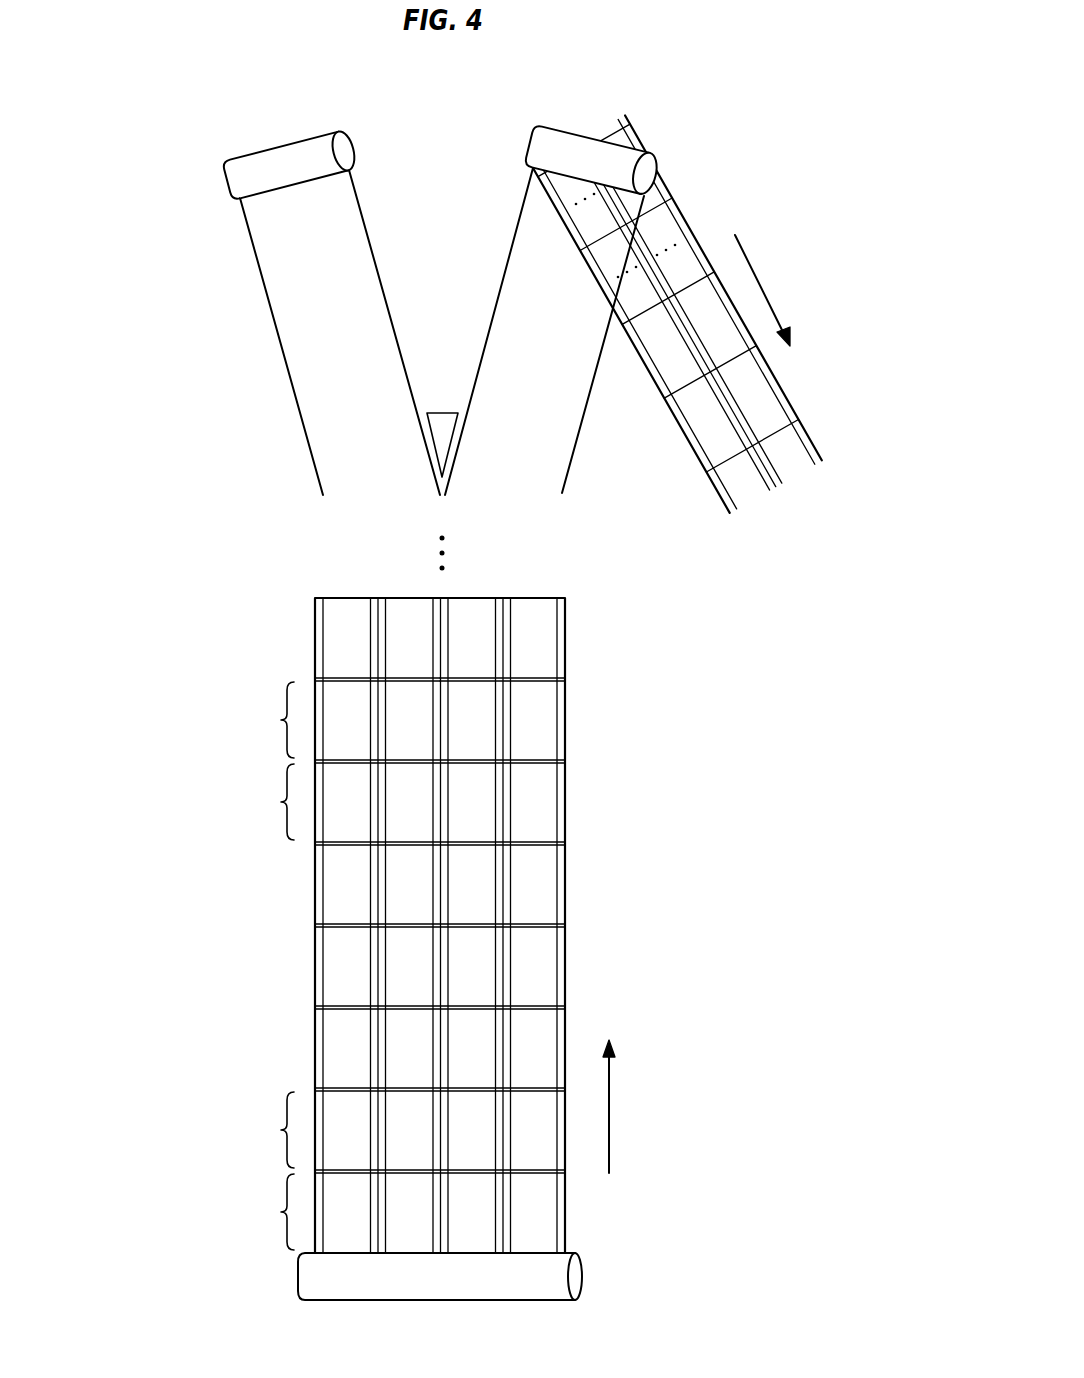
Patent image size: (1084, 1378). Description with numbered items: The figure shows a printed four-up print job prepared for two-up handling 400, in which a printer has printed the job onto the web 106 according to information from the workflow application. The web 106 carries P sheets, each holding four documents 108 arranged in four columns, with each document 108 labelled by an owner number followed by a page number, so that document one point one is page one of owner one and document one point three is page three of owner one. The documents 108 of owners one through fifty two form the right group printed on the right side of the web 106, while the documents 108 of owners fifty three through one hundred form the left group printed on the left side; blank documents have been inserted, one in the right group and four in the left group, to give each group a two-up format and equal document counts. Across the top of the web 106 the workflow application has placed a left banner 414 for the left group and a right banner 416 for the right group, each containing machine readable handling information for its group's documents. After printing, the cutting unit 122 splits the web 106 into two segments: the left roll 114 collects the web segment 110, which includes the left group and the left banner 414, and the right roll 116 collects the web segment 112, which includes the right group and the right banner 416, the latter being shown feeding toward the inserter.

The printed 4-up print job prepared for 2-up handling 400 is at (657, 62).
The left roll 114 is at (240, 176).
The right roll 116 is at (542, 142).
The cutting unit 122 is at (448, 418).
The web segment 110 is at (312, 461).
The web segment 112 is at (578, 440).
The web 106 is at (565, 808).
The documents 108 is at (397, 1025).
The left banner 414 is at (400, 640).
The right banner 416 is at (480, 640).